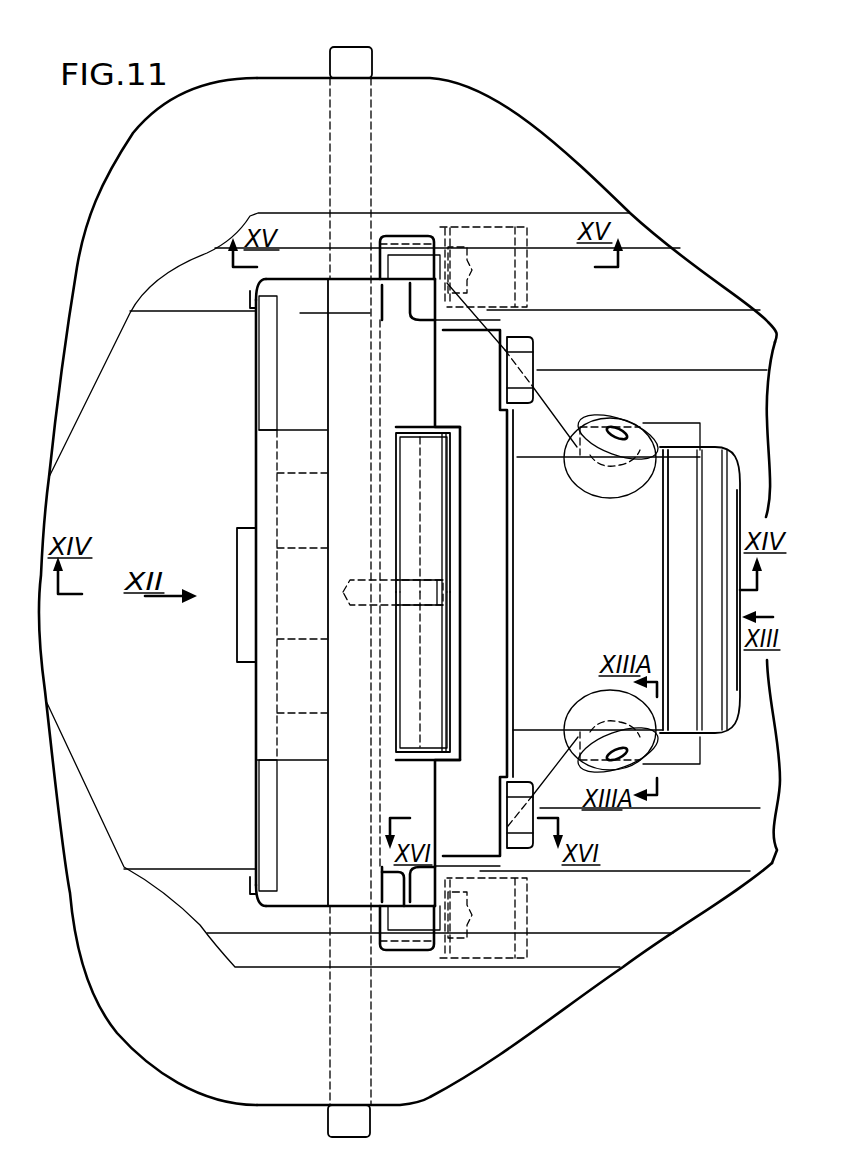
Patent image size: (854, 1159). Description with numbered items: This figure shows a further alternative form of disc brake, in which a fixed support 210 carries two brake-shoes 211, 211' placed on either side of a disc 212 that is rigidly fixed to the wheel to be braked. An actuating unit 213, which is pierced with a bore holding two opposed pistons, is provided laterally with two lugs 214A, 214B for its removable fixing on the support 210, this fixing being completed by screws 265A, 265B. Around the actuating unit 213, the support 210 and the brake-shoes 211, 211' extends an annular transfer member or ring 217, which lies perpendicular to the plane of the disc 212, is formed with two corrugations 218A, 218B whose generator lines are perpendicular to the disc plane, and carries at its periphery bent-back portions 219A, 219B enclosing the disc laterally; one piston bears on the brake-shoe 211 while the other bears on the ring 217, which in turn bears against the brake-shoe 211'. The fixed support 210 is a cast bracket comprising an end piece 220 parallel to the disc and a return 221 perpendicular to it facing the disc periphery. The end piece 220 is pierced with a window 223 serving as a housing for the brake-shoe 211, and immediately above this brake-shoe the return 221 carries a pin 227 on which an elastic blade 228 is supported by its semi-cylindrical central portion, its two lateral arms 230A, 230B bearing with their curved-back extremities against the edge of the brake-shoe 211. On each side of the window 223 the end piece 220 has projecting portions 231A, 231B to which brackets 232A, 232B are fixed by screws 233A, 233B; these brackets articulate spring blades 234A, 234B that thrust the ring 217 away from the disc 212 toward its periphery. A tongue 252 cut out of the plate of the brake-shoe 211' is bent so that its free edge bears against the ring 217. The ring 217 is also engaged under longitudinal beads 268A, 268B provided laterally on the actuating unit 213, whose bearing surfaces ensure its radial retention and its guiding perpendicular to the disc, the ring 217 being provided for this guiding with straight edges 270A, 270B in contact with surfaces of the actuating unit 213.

The fixed support 210 is at (470, 358).
The brake-shoe 211 is at (443, 570).
The brake-shoe 211' is at (285, 591).
The disc 212 is at (380, 48).
The actuating unit 213 is at (601, 597).
The lug 214A is at (508, 362).
The lug 214B is at (470, 833).
The annular transfer member or ring 217 is at (118, 190).
The corrugation 218A is at (695, 292).
The corrugation 218B is at (679, 914).
The bent-back portion 219A is at (195, 158).
The bent-back portion 219B is at (207, 1047).
The end piece 220 is at (392, 341).
The return 221 is at (278, 510).
The window 223 is at (385, 771).
The pin 227 is at (440, 596).
The elastic blade 228 is at (430, 643).
The lateral arm 230A is at (440, 455).
The lateral arm 230B is at (428, 733).
The projecting portion 231A is at (397, 236).
The projecting portion 231B is at (396, 950).
The bracket 232A is at (453, 230).
The bracket 232B is at (447, 960).
The screw 233A is at (470, 281).
The screw 233B is at (470, 918).
The spring blade 234A is at (470, 227).
The spring blade 234B is at (483, 963).
The tongue 252 is at (238, 545).
The screw 265A is at (535, 450).
The screw 265B is at (528, 730).
The longitudinal bead 268A is at (700, 424).
The longitudinal bead 268B is at (697, 763).
The straight edge 270A is at (648, 428).
The straight edge 270B is at (624, 758).